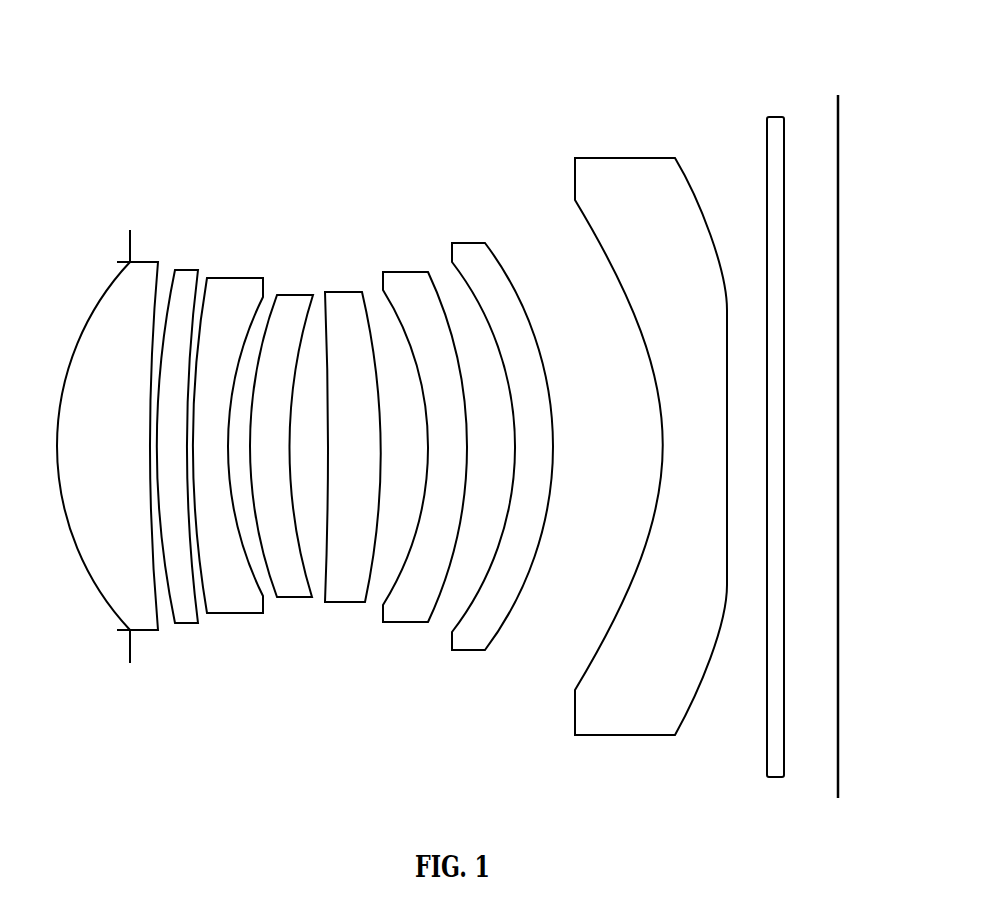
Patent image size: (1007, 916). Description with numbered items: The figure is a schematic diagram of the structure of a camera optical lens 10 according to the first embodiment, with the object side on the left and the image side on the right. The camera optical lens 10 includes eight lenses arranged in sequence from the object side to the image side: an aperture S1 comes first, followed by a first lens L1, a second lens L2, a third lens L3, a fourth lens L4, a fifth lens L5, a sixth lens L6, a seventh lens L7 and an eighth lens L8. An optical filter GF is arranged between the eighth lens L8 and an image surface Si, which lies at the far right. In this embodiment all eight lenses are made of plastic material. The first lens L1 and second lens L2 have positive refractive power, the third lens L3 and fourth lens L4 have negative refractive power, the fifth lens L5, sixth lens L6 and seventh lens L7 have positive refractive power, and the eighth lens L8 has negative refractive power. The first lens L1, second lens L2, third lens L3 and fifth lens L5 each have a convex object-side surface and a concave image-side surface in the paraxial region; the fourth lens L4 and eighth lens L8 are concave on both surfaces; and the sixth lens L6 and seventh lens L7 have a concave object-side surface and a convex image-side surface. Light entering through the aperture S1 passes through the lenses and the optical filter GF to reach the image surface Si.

The camera optical lens 10 is at (476, 41).
The aperture S1 is at (126, 433).
The first lens L1 is at (109, 434).
The second lens L2 is at (178, 433).
The third lens L3 is at (228, 433).
The fourth lens L4 is at (281, 432).
The fifth lens L5 is at (353, 434).
The sixth lens L6 is at (425, 433).
The seventh lens L7 is at (502, 434).
The eighth lens L8 is at (651, 433).
The optical filter GF is at (772, 433).
The image surface Si is at (834, 435).